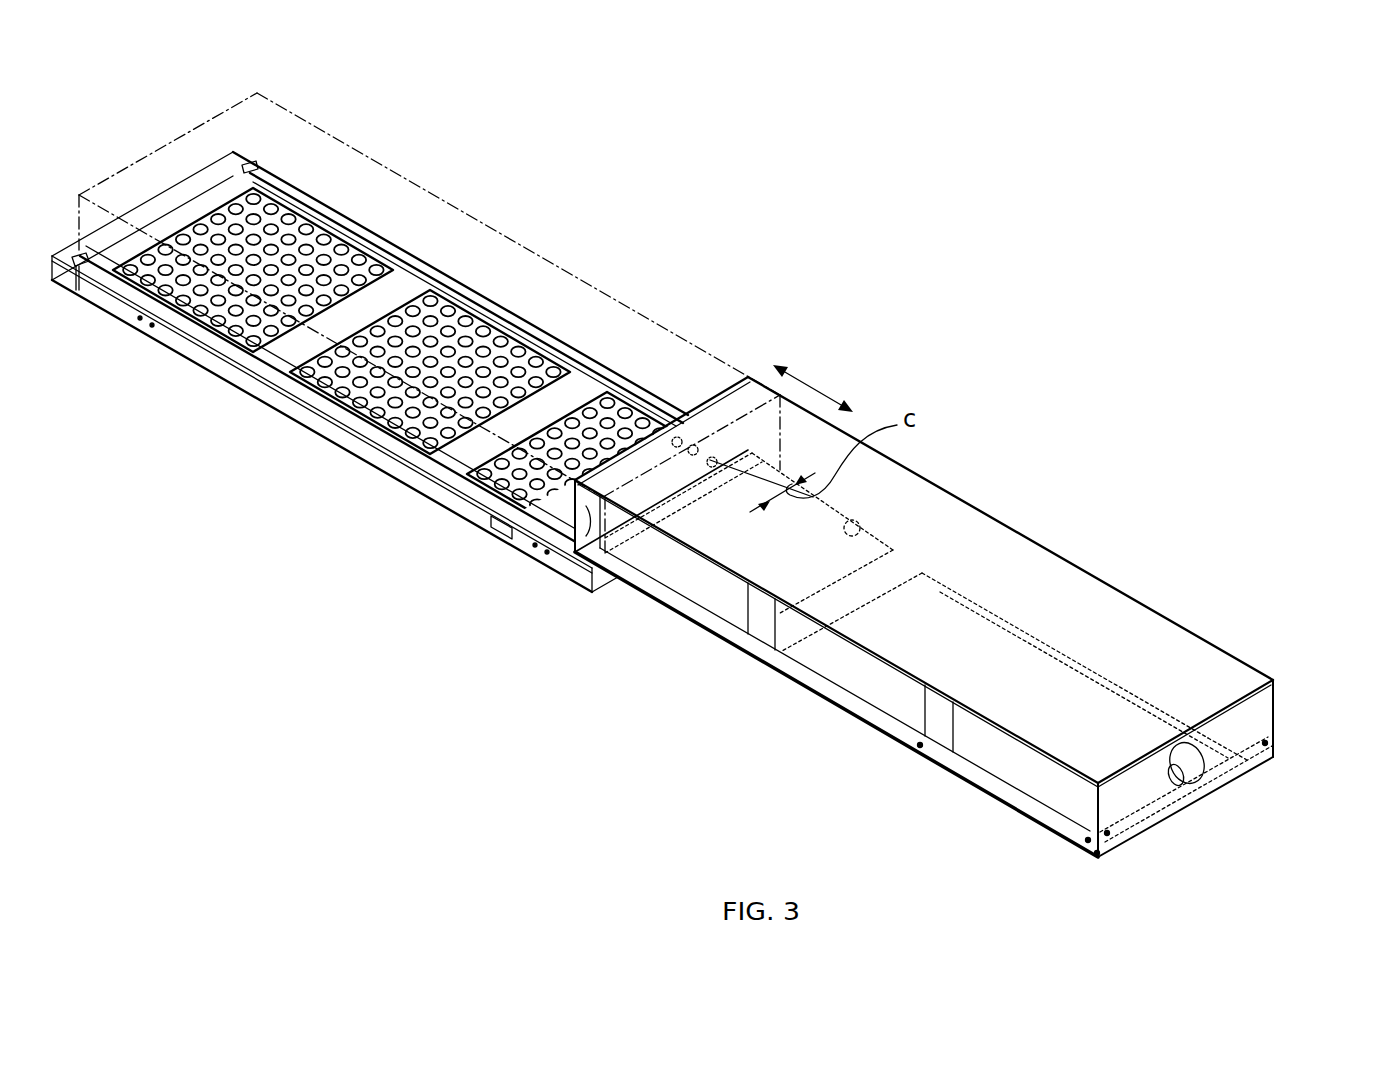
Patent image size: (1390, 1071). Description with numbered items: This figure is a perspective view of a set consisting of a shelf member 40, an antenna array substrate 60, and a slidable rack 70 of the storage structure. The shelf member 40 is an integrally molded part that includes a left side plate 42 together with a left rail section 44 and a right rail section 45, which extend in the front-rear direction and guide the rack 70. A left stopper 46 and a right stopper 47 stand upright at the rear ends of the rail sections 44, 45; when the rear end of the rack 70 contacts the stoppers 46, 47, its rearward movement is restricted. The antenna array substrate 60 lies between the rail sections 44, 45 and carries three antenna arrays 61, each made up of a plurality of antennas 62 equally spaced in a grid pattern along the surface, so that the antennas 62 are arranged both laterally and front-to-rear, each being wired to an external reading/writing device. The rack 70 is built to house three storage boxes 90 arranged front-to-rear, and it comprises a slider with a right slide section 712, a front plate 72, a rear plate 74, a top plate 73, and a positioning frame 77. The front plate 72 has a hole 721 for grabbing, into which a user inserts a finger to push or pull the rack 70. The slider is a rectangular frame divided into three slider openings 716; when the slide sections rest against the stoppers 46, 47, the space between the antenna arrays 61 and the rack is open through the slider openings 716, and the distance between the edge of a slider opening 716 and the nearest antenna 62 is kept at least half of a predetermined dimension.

The shelf member 40 is at (327, 441).
The left side plate 42 is at (262, 387).
The left rail section 44 is at (185, 332).
The right rail section 45 is at (392, 268).
The left stopper 46 is at (78, 291).
The right stopper 47 is at (250, 163).
The antenna array substrate 60 is at (178, 193).
The antenna array 61 is at (437, 308).
The antenna 62 is at (273, 207).
The rack 70 is at (1294, 710).
The front plate 72 is at (1237, 760).
The top plate 73 is at (1145, 625).
The rear plate 74 is at (584, 535).
The positioning frame 77 is at (925, 746).
The storage box 90 is at (676, 578).
The right slide section 712 is at (1005, 600).
The slider opening 716 is at (870, 521).
The hole 721 is at (1183, 787).